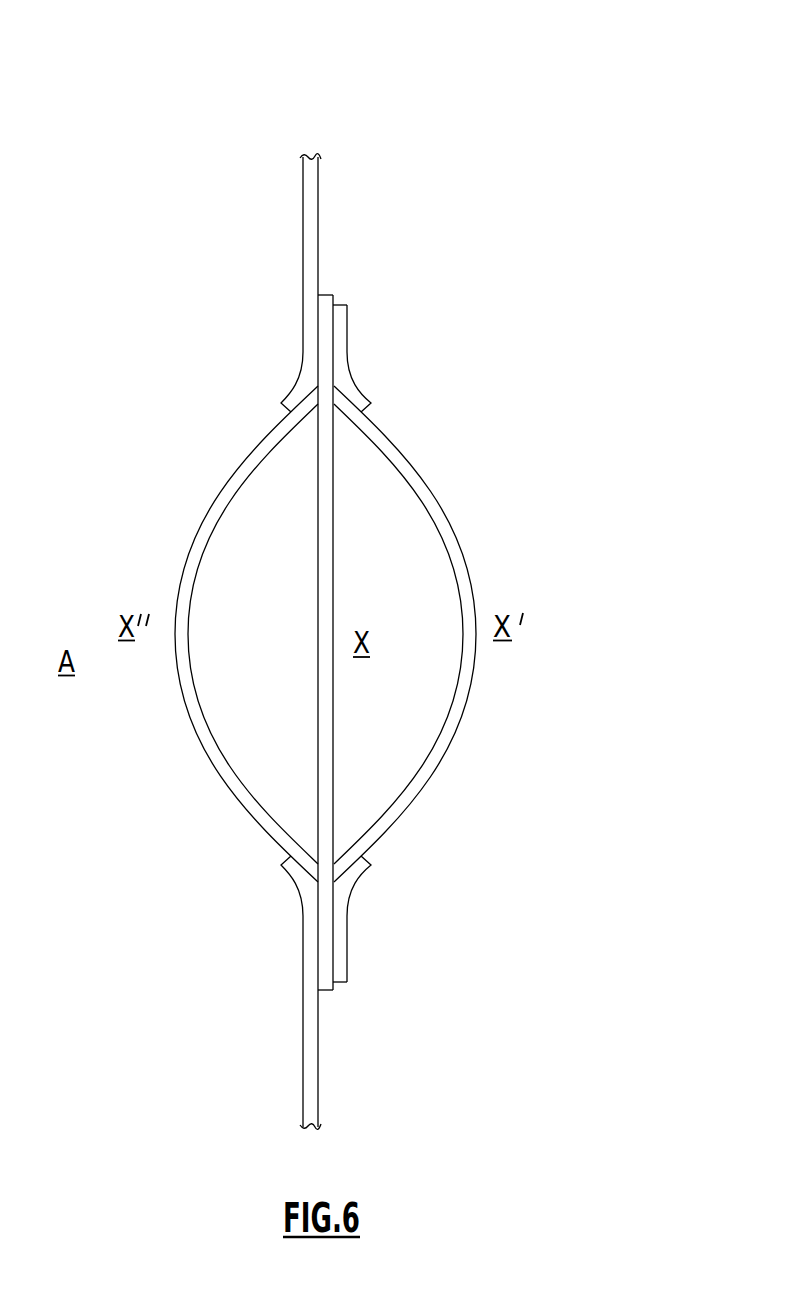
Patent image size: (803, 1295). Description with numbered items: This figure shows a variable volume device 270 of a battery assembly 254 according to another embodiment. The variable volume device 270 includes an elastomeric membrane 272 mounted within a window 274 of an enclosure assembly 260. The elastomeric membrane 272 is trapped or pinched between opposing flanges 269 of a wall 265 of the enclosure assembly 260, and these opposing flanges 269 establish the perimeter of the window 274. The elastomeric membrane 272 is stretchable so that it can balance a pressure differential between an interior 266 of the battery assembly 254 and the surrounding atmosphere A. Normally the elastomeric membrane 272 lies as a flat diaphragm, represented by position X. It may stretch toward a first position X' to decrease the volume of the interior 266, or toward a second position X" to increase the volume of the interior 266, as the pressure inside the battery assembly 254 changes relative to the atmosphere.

The battery assembly 254 is at (337, 75).
The enclosure assembly 260 is at (313, 180).
The wall 265 is at (304, 259).
The interior 266 is at (633, 630).
The opposing flanges 269 is at (302, 382).
The variable volume device 270 is at (440, 419).
The elastomeric membrane 272 is at (209, 521).
The window 274 is at (267, 478).